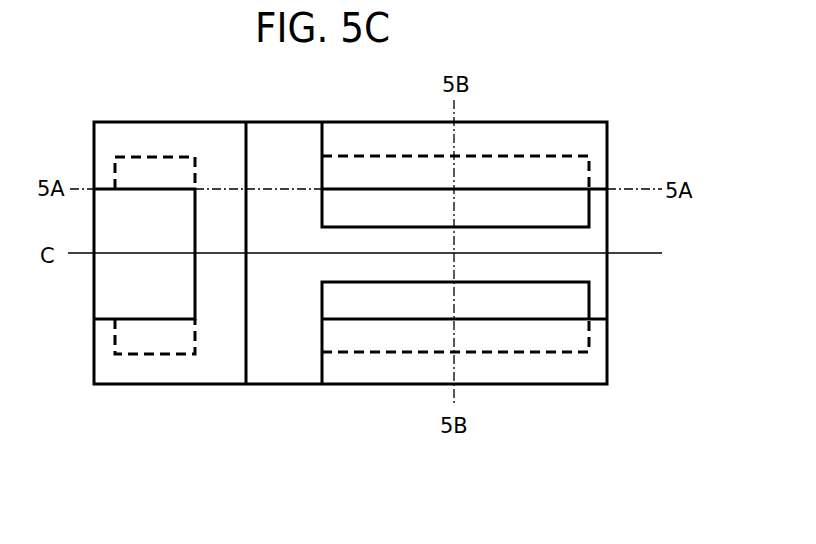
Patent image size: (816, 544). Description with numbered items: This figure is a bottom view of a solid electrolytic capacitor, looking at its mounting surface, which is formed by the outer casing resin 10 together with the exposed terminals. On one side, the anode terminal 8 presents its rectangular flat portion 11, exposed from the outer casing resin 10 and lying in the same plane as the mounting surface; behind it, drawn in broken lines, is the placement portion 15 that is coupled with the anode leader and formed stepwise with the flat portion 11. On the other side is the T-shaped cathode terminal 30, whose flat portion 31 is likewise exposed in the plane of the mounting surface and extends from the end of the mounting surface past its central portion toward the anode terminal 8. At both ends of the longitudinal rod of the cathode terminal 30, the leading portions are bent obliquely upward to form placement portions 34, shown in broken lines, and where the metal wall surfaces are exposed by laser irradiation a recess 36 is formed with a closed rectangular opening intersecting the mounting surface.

The anode terminal 8 is at (93, 292).
The outer casing resin 10 is at (213, 147).
The flat portion 11 is at (149, 263).
The placement portion 15 is at (157, 179).
The cathode terminal 30 is at (619, 297).
The flat portion 31 is at (476, 261).
The placement portion 34 is at (543, 176).
The recess 36 is at (426, 202).